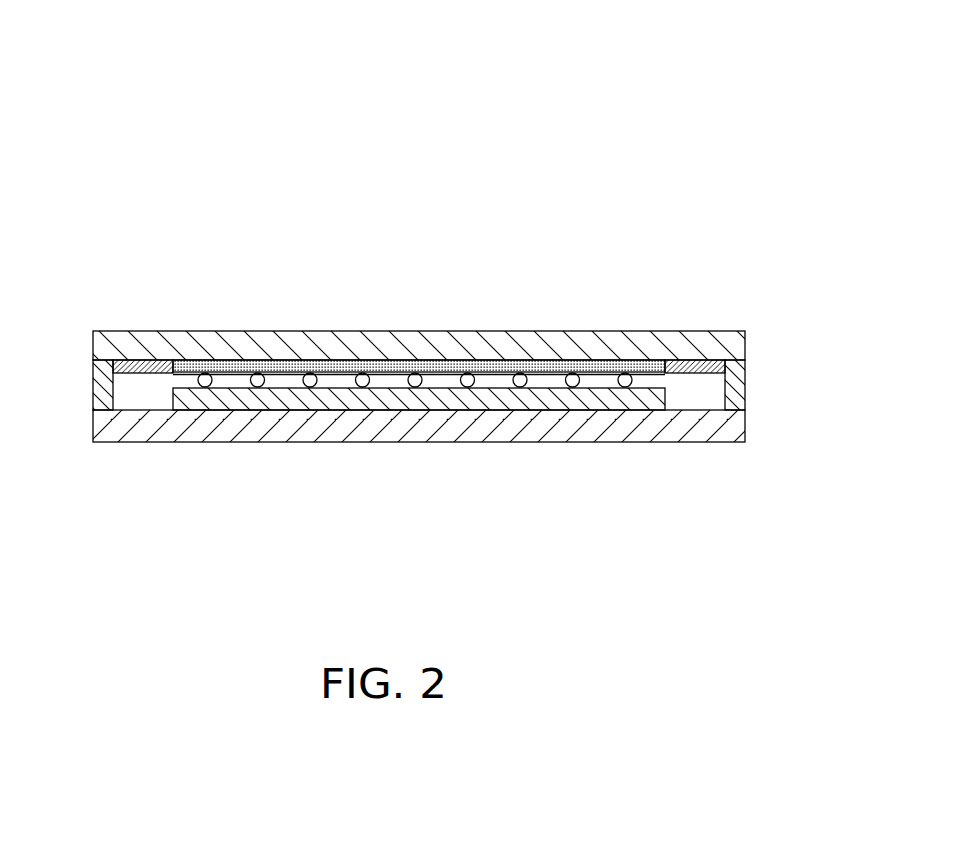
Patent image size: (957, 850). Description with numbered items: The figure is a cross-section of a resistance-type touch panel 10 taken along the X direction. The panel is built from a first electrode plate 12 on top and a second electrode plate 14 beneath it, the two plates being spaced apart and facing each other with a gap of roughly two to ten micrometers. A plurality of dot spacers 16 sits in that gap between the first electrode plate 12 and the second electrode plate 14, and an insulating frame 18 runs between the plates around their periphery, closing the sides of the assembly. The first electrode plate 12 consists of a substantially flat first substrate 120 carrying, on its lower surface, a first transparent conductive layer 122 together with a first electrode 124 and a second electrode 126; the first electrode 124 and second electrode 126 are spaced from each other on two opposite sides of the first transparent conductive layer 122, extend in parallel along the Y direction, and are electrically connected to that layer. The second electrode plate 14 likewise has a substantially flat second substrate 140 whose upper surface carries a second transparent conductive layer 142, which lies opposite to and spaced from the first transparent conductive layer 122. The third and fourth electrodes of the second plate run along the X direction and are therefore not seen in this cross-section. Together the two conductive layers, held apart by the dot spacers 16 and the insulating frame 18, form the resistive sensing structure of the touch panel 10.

The resistance-type touch panel 10 is at (533, 66).
The first electrode plate 12 is at (418, 324).
The first substrate 120 is at (473, 345).
The first transparent conductive layer 122 is at (253, 362).
The first electrode 124 is at (128, 363).
The second electrode 126 is at (710, 363).
The second electrode plate 14 is at (448, 453).
The second substrate 140 is at (728, 428).
The second transparent conductive layer 142 is at (613, 398).
The dot spacers 16 is at (362, 372).
The insulating frame 18 is at (737, 382).